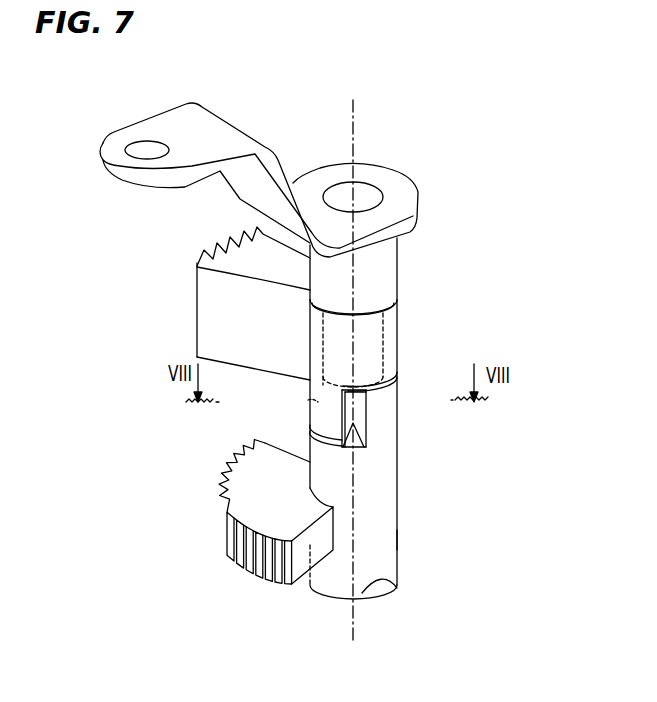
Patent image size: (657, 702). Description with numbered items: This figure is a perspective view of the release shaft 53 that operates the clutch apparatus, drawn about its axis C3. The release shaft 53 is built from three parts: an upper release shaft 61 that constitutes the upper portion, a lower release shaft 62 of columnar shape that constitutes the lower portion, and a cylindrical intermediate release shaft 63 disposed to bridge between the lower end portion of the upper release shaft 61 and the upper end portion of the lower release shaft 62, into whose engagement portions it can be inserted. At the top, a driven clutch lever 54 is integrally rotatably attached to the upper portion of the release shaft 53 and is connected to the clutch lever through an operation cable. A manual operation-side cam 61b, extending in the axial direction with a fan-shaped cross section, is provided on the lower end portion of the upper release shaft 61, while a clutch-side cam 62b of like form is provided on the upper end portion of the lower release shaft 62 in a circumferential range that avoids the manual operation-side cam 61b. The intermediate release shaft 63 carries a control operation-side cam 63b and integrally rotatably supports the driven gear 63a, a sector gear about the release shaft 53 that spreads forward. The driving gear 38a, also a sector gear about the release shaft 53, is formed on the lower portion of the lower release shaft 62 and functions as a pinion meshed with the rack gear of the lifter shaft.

The driven clutch lever 54 is at (230, 121).
The rotation axis C3 is at (355, 130).
The upper release shaft 61 is at (386, 262).
The manual operation-side cam 61b is at (313, 405).
The intermediate release shaft 63 is at (392, 334).
The driven gear 63a is at (197, 305).
The control operation-side cam 63b is at (310, 417).
The lower release shaft 62 is at (384, 487).
The clutch-side cam 62b is at (388, 410).
The driving gear 38a is at (226, 514).
The release shaft 53 is at (398, 539).